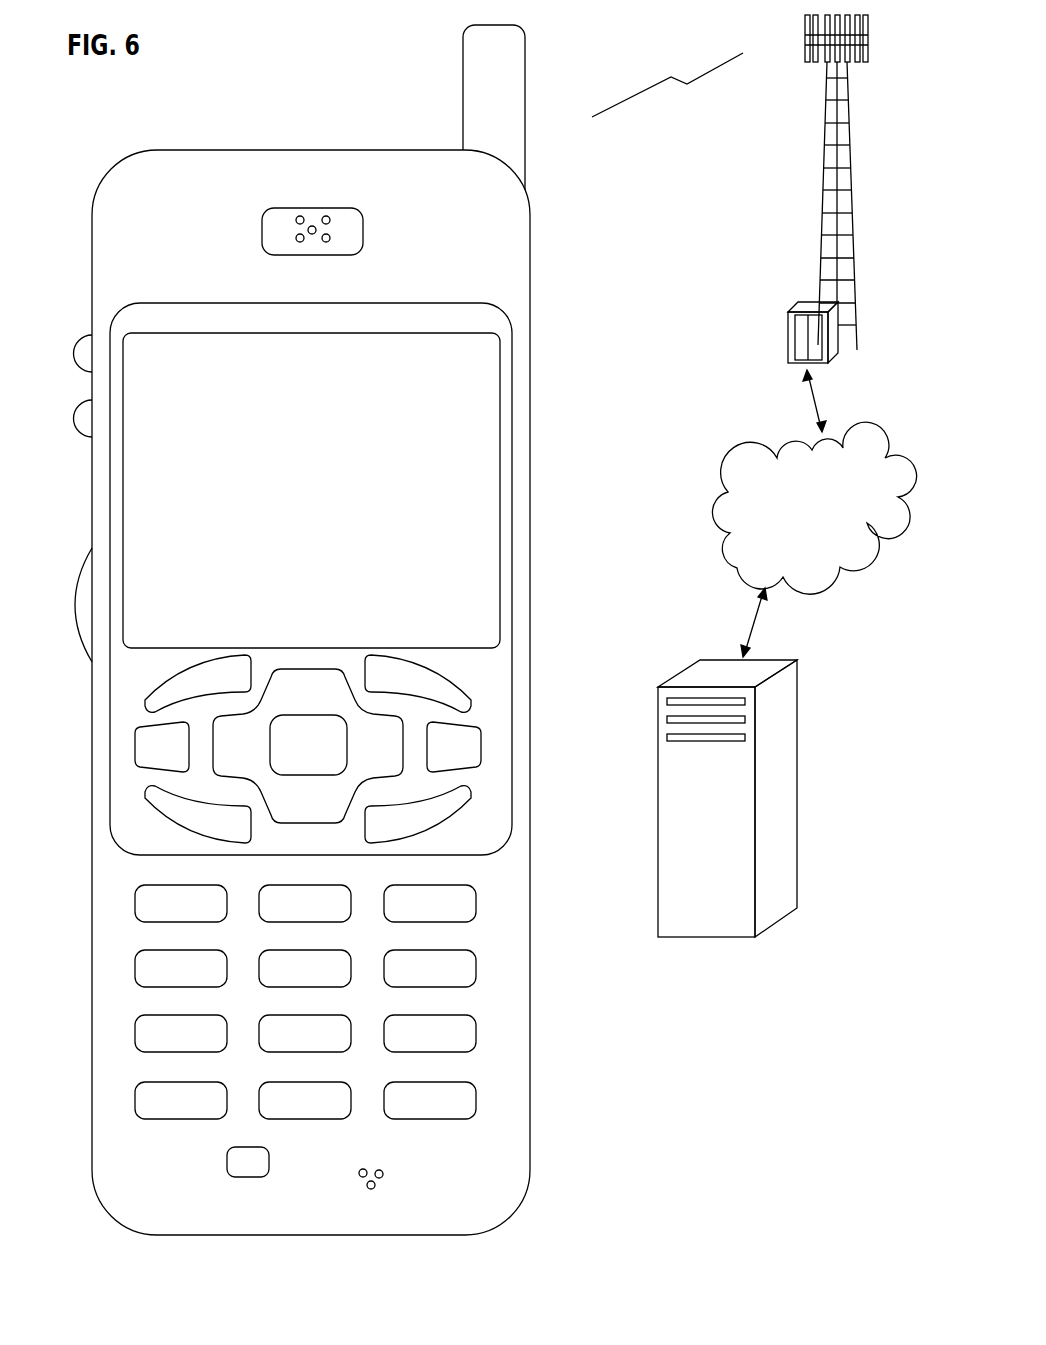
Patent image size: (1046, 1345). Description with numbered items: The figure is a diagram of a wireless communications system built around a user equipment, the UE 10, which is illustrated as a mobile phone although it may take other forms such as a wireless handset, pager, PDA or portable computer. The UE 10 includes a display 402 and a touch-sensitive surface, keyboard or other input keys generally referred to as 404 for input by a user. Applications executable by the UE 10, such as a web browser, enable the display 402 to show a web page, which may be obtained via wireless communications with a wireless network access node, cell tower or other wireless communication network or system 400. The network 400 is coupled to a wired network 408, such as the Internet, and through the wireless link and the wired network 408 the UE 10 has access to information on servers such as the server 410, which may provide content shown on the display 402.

The user equipment 10 is at (143, 1236).
The display 402 is at (500, 350).
The input keys 404 is at (540, 658).
The wireless communication network 400 is at (820, 205).
The wired network 408 is at (730, 566).
The server 410 is at (707, 937).